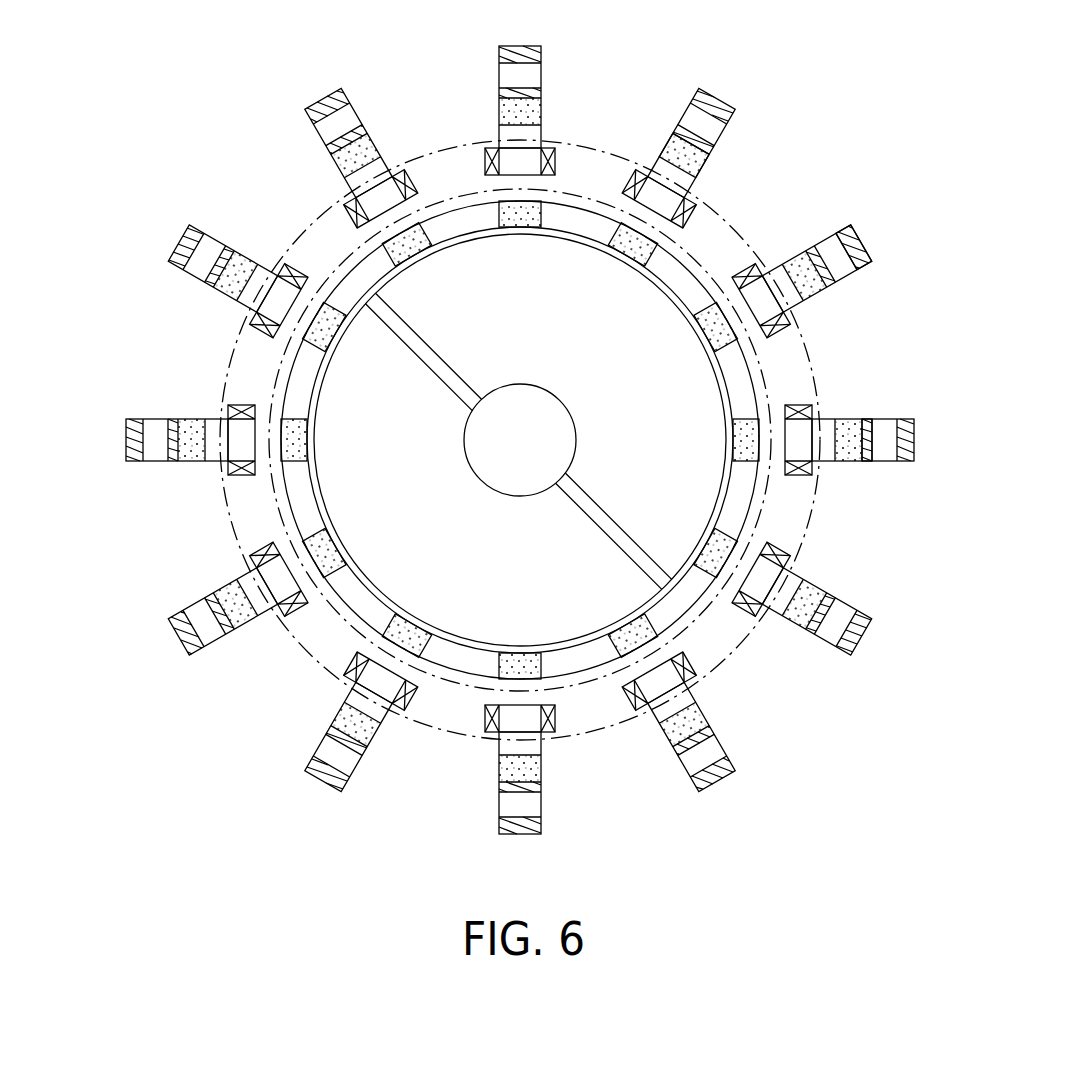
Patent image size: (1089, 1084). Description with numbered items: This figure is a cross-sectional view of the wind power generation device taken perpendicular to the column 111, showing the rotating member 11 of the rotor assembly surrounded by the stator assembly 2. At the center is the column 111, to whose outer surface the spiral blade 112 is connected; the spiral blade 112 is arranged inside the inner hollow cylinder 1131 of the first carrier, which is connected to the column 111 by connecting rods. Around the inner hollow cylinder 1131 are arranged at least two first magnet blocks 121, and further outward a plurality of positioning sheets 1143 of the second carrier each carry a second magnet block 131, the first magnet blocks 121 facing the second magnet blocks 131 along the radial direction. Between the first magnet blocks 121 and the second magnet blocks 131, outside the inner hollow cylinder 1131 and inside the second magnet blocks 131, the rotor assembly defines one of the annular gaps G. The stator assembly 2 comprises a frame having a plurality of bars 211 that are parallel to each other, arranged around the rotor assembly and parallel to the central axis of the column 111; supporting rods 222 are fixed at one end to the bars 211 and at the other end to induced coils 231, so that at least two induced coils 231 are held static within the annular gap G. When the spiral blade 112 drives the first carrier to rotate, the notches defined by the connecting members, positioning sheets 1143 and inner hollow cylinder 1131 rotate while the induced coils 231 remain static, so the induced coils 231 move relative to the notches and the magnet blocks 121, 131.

The annular gap G is at (740, 226).
The rotating member 11 is at (663, 379).
The column 111 is at (558, 438).
The inner hollow cylinder 1131 is at (693, 502).
The spiral blade 112 is at (733, 512).
The first magnet block 121 is at (613, 230).
The positioning sheet 1143 is at (927, 426).
The stator assembly 2 is at (576, 438).
The bar 211 is at (867, 237).
The supporting rod 222 is at (805, 298).
The induced coil 231 is at (648, 177).
The second magnet block 131 is at (710, 165).